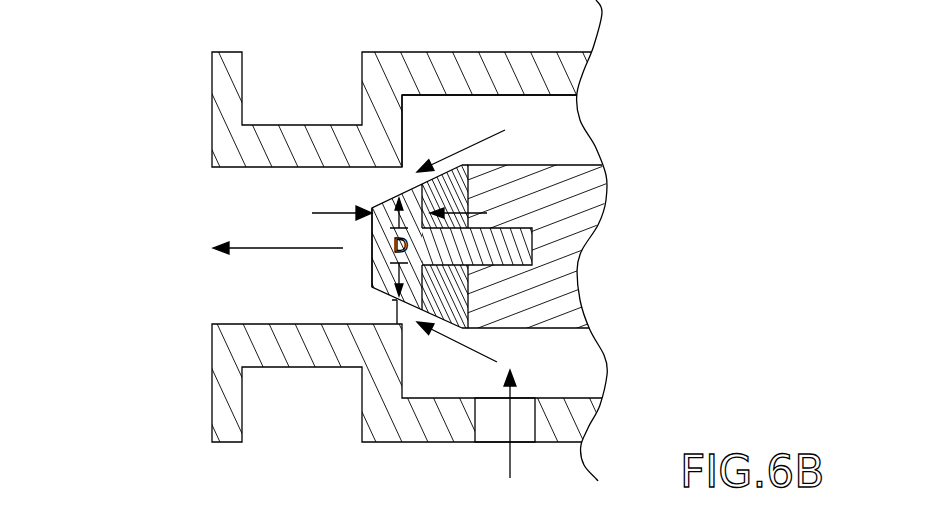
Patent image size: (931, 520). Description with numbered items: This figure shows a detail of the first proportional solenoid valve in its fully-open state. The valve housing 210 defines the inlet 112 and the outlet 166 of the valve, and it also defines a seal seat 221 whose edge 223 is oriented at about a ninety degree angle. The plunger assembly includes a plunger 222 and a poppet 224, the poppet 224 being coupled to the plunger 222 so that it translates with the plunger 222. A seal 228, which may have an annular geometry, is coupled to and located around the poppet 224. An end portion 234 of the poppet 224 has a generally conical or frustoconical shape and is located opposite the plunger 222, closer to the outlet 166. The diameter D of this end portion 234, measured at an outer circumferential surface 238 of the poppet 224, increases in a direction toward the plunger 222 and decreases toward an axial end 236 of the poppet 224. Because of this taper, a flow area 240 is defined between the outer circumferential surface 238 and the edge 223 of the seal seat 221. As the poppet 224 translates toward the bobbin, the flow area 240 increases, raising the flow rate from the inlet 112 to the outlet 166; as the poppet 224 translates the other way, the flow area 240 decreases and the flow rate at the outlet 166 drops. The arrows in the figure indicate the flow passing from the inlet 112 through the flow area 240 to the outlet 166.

The inlet 112 is at (520, 436).
The outlet 166 is at (262, 238).
The valve housing 210 is at (228, 108).
The seal seat 221 is at (403, 160).
The plunger 222 is at (565, 192).
The edge 223 is at (402, 163).
The poppet 224 is at (533, 252).
The seal 228 is at (455, 290).
The end portion 234 is at (328, 222).
The axial end 236 is at (375, 275).
The outer circumferential surface 238 is at (383, 200).
The flow area 240 is at (396, 314).